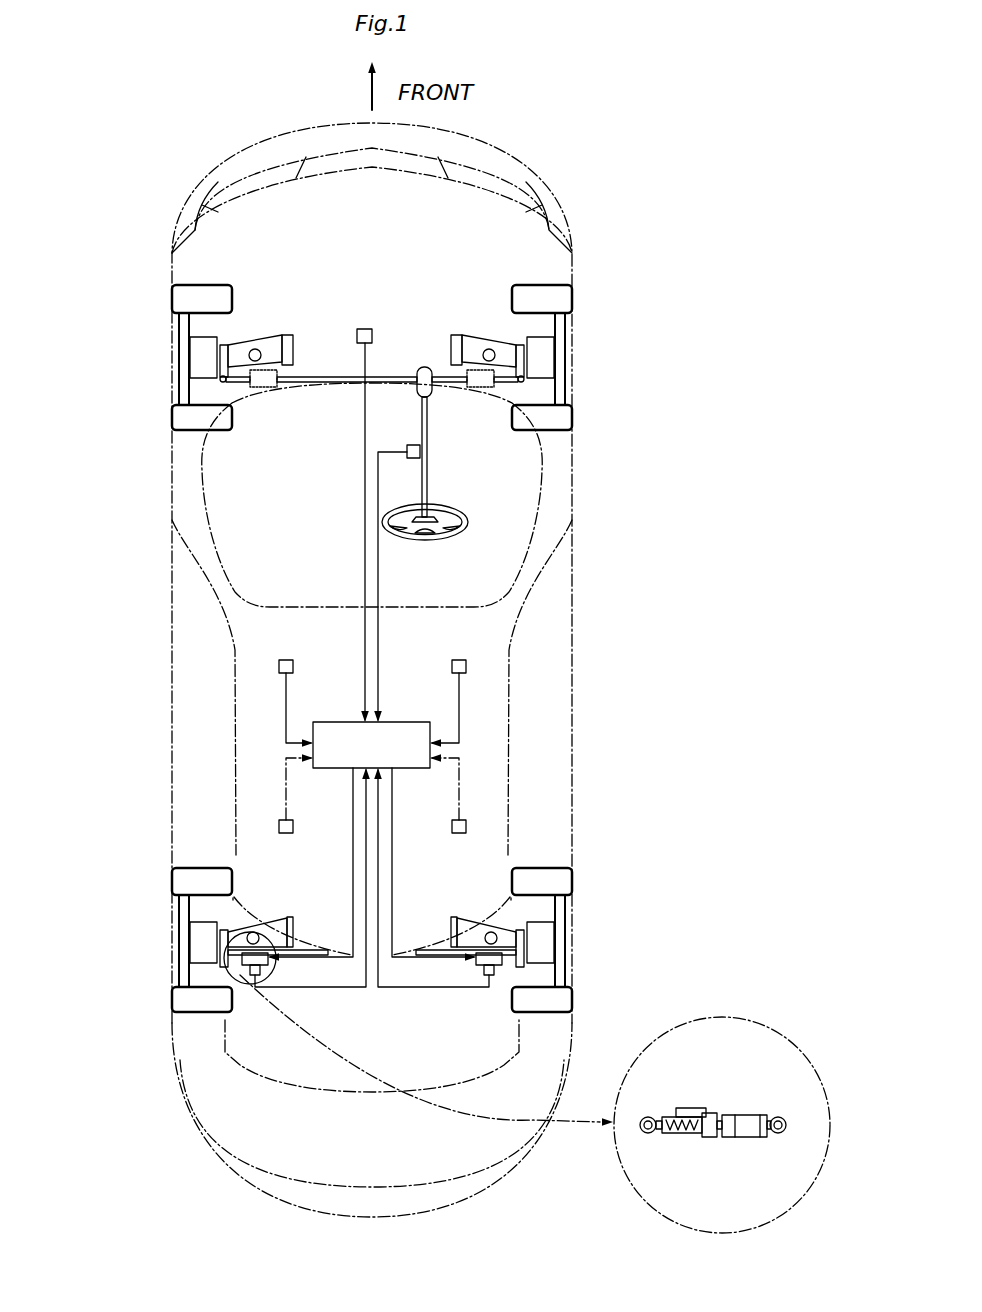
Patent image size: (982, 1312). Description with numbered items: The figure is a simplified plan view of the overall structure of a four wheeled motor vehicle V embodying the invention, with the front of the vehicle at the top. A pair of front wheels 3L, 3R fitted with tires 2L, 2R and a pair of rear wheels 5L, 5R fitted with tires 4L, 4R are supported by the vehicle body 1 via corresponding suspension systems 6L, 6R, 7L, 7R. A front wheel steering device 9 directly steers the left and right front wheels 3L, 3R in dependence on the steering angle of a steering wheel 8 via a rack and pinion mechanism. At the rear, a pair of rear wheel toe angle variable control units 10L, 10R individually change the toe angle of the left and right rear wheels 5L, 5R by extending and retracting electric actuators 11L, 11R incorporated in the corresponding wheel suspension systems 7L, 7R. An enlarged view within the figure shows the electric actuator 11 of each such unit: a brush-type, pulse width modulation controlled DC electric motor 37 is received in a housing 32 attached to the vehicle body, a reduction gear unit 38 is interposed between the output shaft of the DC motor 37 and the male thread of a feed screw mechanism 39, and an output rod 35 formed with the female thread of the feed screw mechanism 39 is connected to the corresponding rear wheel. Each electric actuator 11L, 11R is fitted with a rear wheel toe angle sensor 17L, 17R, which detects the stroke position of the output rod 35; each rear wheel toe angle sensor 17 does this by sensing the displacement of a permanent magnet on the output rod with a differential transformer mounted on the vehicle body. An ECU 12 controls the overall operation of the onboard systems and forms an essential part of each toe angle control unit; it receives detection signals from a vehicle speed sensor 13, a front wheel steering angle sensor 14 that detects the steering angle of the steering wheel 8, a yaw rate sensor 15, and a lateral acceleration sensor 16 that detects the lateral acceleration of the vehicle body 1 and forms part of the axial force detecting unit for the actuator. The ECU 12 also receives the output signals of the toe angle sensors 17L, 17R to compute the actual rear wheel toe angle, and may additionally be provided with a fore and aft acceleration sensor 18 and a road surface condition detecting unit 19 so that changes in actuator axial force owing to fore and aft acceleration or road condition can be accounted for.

The motor vehicle V is at (583, 123).
The vehicle body 1 is at (585, 230).
The tire 2L is at (183, 423).
The tire 2R is at (561, 423).
The front wheel 3L is at (178, 323).
The front wheel 3R is at (566, 323).
The tire 4L is at (178, 1000).
The tire 4R is at (566, 1000).
The rear wheel 5L is at (178, 928).
The rear wheel 5R is at (566, 928).
The suspension system 6L is at (236, 336).
The suspension system 6R is at (508, 336).
The wheel suspension system 7L is at (235, 918).
The wheel suspension system 7R is at (509, 918).
The steering wheel 8 is at (433, 540).
The front wheel steering device 9 is at (388, 376).
The rear wheel toe angle variable control unit 10L is at (213, 835).
The rear wheel toe angle variable control unit 10R is at (531, 835).
The electric actuator 11 is at (760, 1095).
The electric actuator 11L is at (230, 970).
The electric actuator 11R is at (514, 970).
The ECU 12 is at (413, 722).
The vehicle speed sensor 13 is at (365, 329).
The front wheel steering angle sensor 14 is at (417, 443).
The yaw rate sensor 15 is at (286, 660).
The lateral acceleration sensor 16 is at (459, 660).
The rear wheel toe angle sensor 17 is at (690, 1108).
The rear wheel toe angle sensor 17L is at (244, 970).
The rear wheel toe angle sensor 17R is at (500, 970).
The fore and aft acceleration sensor 18 is at (286, 833).
The road surface condition detecting unit 19 is at (459, 833).
The housing 32 is at (710, 1112).
The output rod 35 is at (650, 1134).
The DC electric motor 37 is at (745, 1137).
The reduction gear unit 38 is at (718, 1137).
The feed screw mechanism 39 is at (688, 1142).